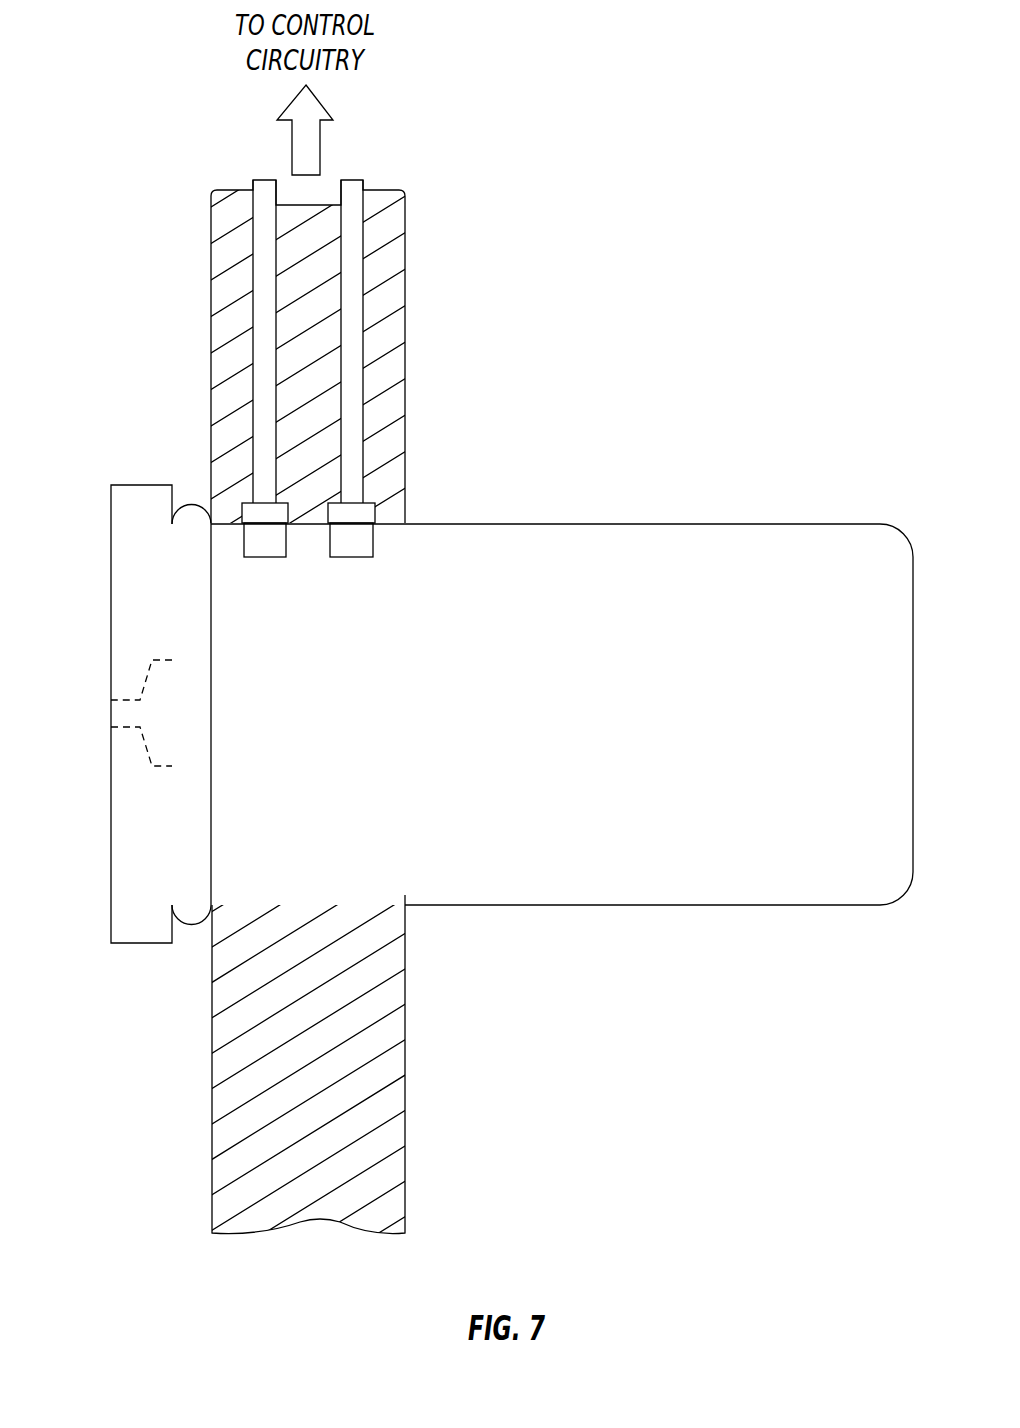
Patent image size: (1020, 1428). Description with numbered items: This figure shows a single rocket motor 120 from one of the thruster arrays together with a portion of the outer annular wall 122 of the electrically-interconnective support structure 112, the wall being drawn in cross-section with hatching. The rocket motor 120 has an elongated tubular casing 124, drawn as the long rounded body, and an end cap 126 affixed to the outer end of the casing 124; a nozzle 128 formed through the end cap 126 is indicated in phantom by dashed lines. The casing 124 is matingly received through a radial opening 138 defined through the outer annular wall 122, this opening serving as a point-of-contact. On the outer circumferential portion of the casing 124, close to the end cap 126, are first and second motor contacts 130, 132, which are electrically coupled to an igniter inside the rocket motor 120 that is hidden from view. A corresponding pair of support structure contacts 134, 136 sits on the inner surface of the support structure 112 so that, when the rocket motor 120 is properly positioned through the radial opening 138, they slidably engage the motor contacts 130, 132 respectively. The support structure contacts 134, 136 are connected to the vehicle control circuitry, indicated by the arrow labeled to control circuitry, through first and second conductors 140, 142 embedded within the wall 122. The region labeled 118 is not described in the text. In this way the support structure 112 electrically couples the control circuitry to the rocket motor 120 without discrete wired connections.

The support structure 112 is at (212, 1108).
The cavity 118 is at (668, 1108).
The rocket motor 120 is at (562, 712).
The outer annular wall 122 is at (228, 393).
The elongated tubular casing 124 is at (709, 895).
The end cap 126 is at (127, 918).
The nozzle 128 is at (118, 716).
The first motor contact 130 is at (262, 543).
The second motor contact 132 is at (357, 543).
The first support structure contact 134 is at (252, 505).
The second support structure contact 136 is at (372, 510).
The radial opening 138 is at (408, 908).
The first conductor 140 is at (262, 305).
The second conductor 142 is at (357, 340).